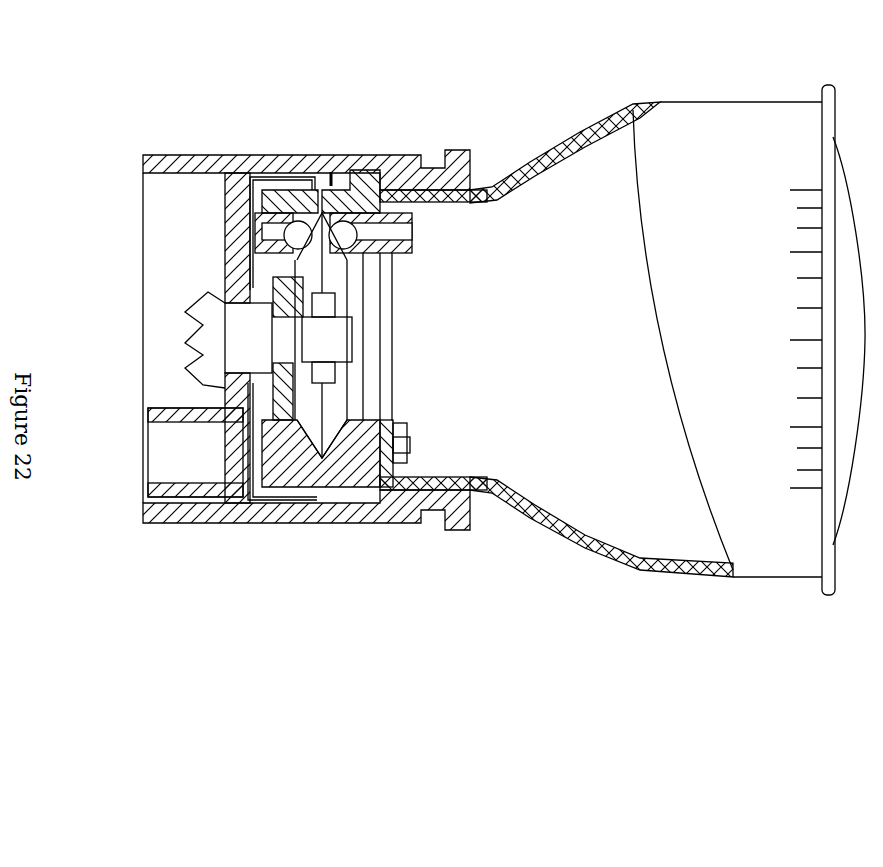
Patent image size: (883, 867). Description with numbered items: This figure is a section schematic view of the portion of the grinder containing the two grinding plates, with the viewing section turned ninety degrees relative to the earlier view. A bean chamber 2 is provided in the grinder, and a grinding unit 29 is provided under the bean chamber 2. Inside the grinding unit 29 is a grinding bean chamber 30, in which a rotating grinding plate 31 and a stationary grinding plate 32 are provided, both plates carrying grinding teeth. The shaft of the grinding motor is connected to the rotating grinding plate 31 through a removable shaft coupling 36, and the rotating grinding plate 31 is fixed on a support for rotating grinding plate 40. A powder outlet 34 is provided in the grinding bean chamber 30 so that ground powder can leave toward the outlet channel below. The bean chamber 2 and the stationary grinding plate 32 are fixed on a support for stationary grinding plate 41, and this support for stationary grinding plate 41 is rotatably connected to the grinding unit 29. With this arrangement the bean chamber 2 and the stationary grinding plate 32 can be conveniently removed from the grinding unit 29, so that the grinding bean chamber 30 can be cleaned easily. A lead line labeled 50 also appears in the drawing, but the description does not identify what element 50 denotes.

The bean chamber 2 is at (667, 413).
The grinding unit 29 is at (346, 467).
The grinding bean chamber 30 is at (399, 488).
The rotating grinding plate 31 is at (361, 488).
The stationary grinding plate 32 is at (453, 592).
The powder outlet 34 is at (306, 457).
The removable shaft coupling 36 is at (271, 468).
The support for rotating grinding plate 40 is at (322, 470).
The support for stationary grinding plate 41 is at (494, 477).
The lamp 50 is at (332, 185).